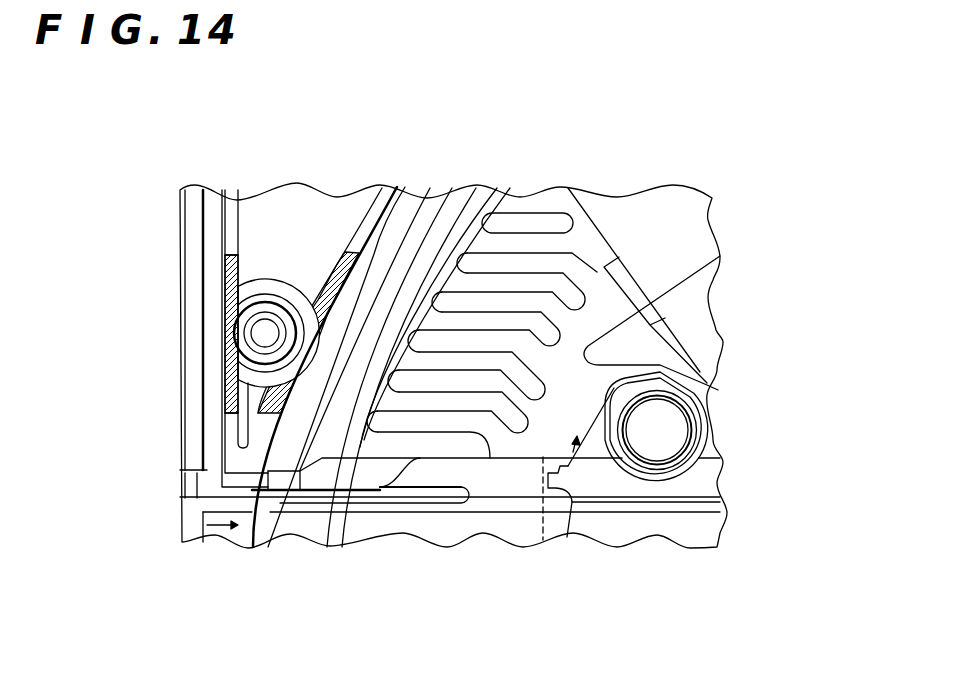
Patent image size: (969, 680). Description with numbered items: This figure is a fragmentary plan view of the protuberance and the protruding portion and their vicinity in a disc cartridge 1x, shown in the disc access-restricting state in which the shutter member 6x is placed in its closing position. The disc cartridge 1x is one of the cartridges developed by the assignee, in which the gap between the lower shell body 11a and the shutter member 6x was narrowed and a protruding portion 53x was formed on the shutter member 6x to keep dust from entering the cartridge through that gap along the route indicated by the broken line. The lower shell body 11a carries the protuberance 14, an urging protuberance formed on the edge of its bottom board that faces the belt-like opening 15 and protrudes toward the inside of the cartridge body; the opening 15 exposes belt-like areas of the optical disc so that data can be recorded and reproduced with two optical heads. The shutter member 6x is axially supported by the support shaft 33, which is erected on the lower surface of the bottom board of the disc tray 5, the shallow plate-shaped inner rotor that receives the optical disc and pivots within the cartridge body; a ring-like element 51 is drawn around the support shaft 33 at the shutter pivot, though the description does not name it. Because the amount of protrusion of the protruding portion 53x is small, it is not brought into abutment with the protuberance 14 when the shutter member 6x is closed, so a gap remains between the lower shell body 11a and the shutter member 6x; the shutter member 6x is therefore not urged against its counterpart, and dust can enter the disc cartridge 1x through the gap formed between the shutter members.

The disc cartridge 1x is at (411, 150).
The lower shell body 11a is at (650, 218).
The shutter member 6x is at (705, 286).
The boss 51 is at (664, 417).
The support shaft 33 is at (657, 443).
The protuberance 14 is at (549, 462).
The protruding portion 53x is at (550, 473).
The disc tray 5 is at (403, 522).
The opening 15 is at (205, 527).